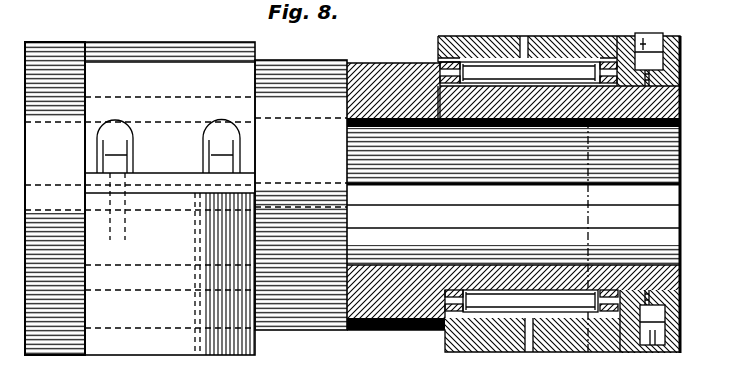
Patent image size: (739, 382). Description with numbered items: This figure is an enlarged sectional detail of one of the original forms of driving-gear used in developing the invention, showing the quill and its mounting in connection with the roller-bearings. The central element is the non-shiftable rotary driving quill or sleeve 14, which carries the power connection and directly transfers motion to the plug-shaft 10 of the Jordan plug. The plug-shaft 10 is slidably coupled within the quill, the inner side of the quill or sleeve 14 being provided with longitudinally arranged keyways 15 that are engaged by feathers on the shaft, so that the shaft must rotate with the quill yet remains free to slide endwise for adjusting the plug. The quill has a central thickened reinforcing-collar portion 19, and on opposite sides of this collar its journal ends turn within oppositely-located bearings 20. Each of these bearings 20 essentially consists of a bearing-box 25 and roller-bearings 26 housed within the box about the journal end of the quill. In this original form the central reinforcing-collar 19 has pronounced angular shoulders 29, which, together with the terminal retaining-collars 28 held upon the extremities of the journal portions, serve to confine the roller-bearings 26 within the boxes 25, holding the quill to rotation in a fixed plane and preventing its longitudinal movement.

The plug-shaft 10 is at (585, 47).
The driving quill or sleeve 14 is at (655, 226).
The keyways 15 is at (666, 192).
The central reinforcing-collar portion 19 is at (392, 80).
The bearings 20 is at (104, 44).
The bearing-boxes 25 is at (153, 42).
The roller-bearings 26 is at (486, 75).
The retaining-collars 28 is at (650, 342).
The angular shoulders 29 is at (432, 64).